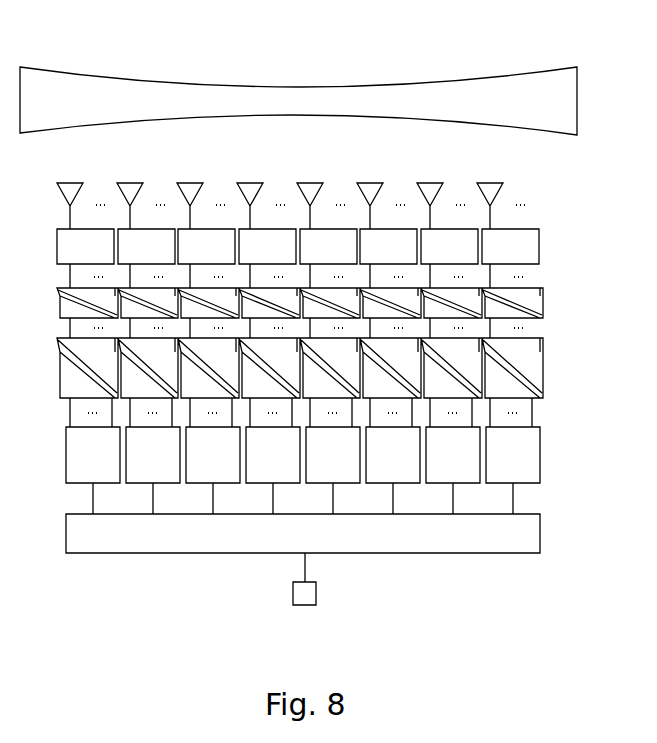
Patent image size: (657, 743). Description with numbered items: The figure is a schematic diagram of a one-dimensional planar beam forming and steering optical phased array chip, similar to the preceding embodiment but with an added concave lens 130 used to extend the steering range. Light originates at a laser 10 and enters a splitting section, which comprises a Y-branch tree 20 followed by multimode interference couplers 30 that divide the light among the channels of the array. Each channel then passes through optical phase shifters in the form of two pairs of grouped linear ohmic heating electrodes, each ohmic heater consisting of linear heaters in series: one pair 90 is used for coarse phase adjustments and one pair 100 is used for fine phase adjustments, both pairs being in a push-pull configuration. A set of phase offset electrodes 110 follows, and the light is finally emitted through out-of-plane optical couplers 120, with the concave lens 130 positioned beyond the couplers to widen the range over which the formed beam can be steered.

The concave lens 130 is at (580, 80).
The out-of-plane optical couplers 120 is at (507, 193).
The phase offset electrodes 110 is at (547, 246).
The pair of grouped linear ohmic heating electrodes for fine phase adjustments 100 is at (548, 302).
The pair of grouped linear ohmic heating electrodes for coarse phase adjustments 90 is at (548, 362).
The multimode interference couplers 30 is at (548, 446).
The Y-branch tree 20 is at (548, 528).
The laser 10 is at (309, 607).